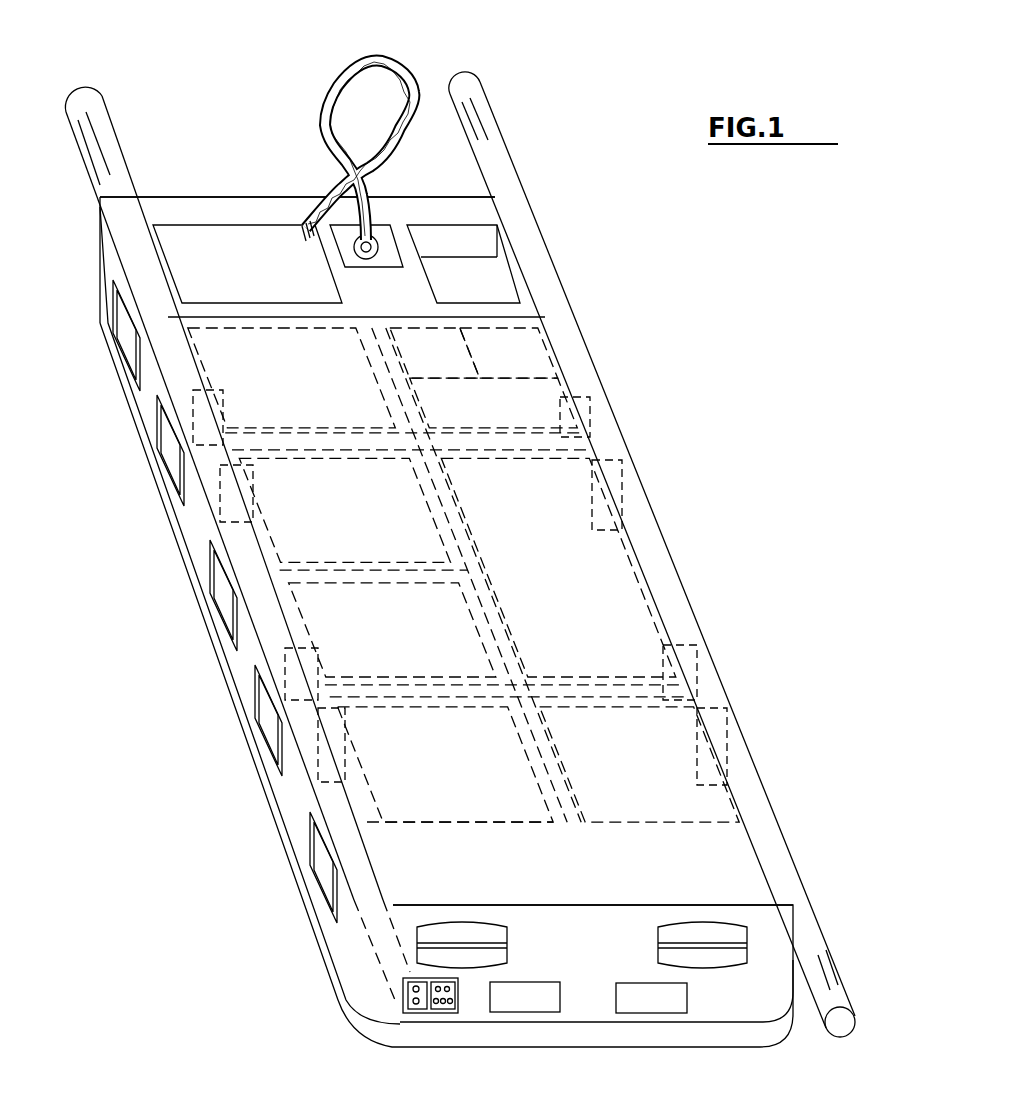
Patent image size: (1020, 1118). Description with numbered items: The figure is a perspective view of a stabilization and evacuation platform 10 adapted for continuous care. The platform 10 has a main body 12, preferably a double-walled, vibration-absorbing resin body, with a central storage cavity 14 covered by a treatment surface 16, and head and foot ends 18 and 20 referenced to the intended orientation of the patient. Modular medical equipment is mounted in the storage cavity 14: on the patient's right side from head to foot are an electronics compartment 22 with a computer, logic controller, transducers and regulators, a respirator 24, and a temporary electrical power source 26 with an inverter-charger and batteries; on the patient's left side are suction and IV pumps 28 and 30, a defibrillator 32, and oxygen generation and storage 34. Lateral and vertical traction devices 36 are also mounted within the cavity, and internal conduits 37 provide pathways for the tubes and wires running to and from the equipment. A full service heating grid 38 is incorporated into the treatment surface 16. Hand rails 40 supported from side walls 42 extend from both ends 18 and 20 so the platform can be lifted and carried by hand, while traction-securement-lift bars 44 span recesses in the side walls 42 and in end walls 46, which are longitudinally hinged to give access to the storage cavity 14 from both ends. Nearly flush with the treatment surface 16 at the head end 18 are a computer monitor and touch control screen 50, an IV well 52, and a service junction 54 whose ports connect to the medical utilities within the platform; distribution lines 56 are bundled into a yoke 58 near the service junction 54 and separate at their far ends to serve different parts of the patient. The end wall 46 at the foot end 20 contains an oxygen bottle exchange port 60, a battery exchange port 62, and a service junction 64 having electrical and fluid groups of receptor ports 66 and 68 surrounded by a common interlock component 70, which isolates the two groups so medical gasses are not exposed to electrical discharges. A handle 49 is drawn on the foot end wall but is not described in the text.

The stabilization and evacuation platform 10 is at (532, 175).
The main body 12 is at (200, 524).
The central storage cavity 14 is at (645, 655).
The treatment surface 16 is at (472, 778).
The head end 18 is at (254, 194).
The foot end 20 is at (707, 1008).
The electronics compartment 22 is at (297, 400).
The respirator 24 is at (351, 540).
The temporary electrical power source 26 is at (400, 640).
The suction pump 28 is at (448, 372).
The IV pump 30 is at (522, 372).
The defibrillator 32 is at (492, 422).
The oxygen generation and storage 34 is at (570, 612).
The lateral and vertical traction devices 36 is at (604, 440).
The internal conduits 37 is at (636, 552).
The full service heating grid 38 is at (642, 775).
The hand rails 40 is at (93, 124).
The side walls 42 is at (157, 395).
The traction-securement-lift bars 44 is at (220, 592).
The end walls 46 is at (568, 957).
The handle 49 is at (700, 952).
The computer monitor and touch control screen 50 is at (201, 275).
The IV well 52 is at (460, 240).
The service junction 54 is at (384, 254).
The distribution lines 56 is at (304, 243).
The yoke 58 is at (380, 60).
The oxygen bottle exchange port 60 is at (667, 995).
The battery exchange port 62 is at (556, 995).
The service junction 64 is at (396, 1005).
The electrical group of receptor ports 66 is at (419, 1008).
The fluid group of receptor ports 68 is at (442, 1012).
The interlock component 70 is at (446, 1012).